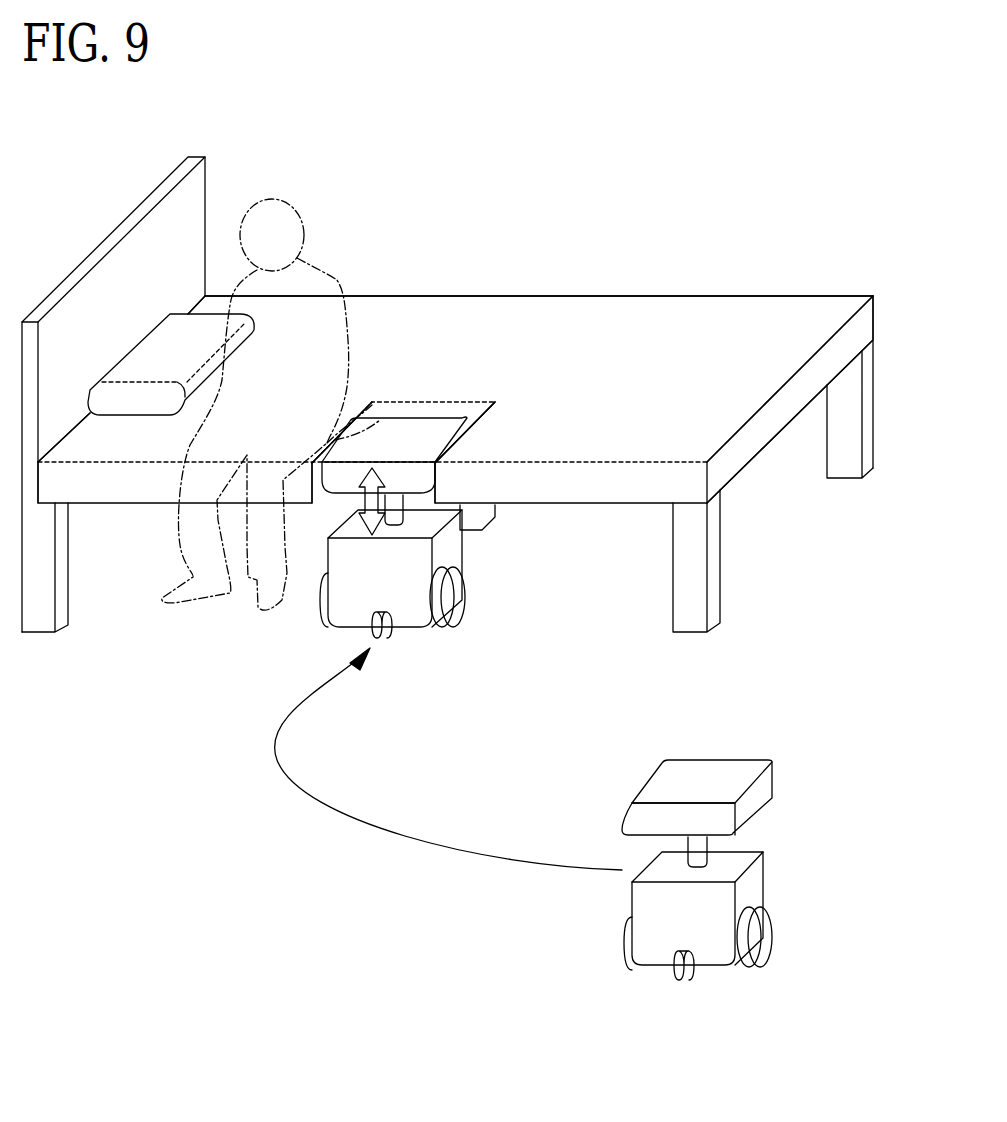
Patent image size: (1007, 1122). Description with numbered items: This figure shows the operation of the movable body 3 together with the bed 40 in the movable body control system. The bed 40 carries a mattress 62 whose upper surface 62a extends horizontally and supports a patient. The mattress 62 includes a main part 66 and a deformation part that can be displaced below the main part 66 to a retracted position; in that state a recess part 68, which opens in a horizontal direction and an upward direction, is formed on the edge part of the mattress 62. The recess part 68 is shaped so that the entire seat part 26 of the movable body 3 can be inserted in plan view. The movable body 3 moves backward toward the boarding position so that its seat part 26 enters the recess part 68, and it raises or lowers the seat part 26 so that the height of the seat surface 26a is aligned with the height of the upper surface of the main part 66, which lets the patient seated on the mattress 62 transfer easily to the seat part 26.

The bed 40 is at (682, 190).
The mattress 62 is at (546, 280).
The main part 66 is at (447, 325).
The recess part 68 is at (352, 436).
The seat surface 26a is at (417, 437).
The upper surface 62a is at (703, 402).
The seat part 26 is at (702, 777).
The movable body 3 is at (815, 790).